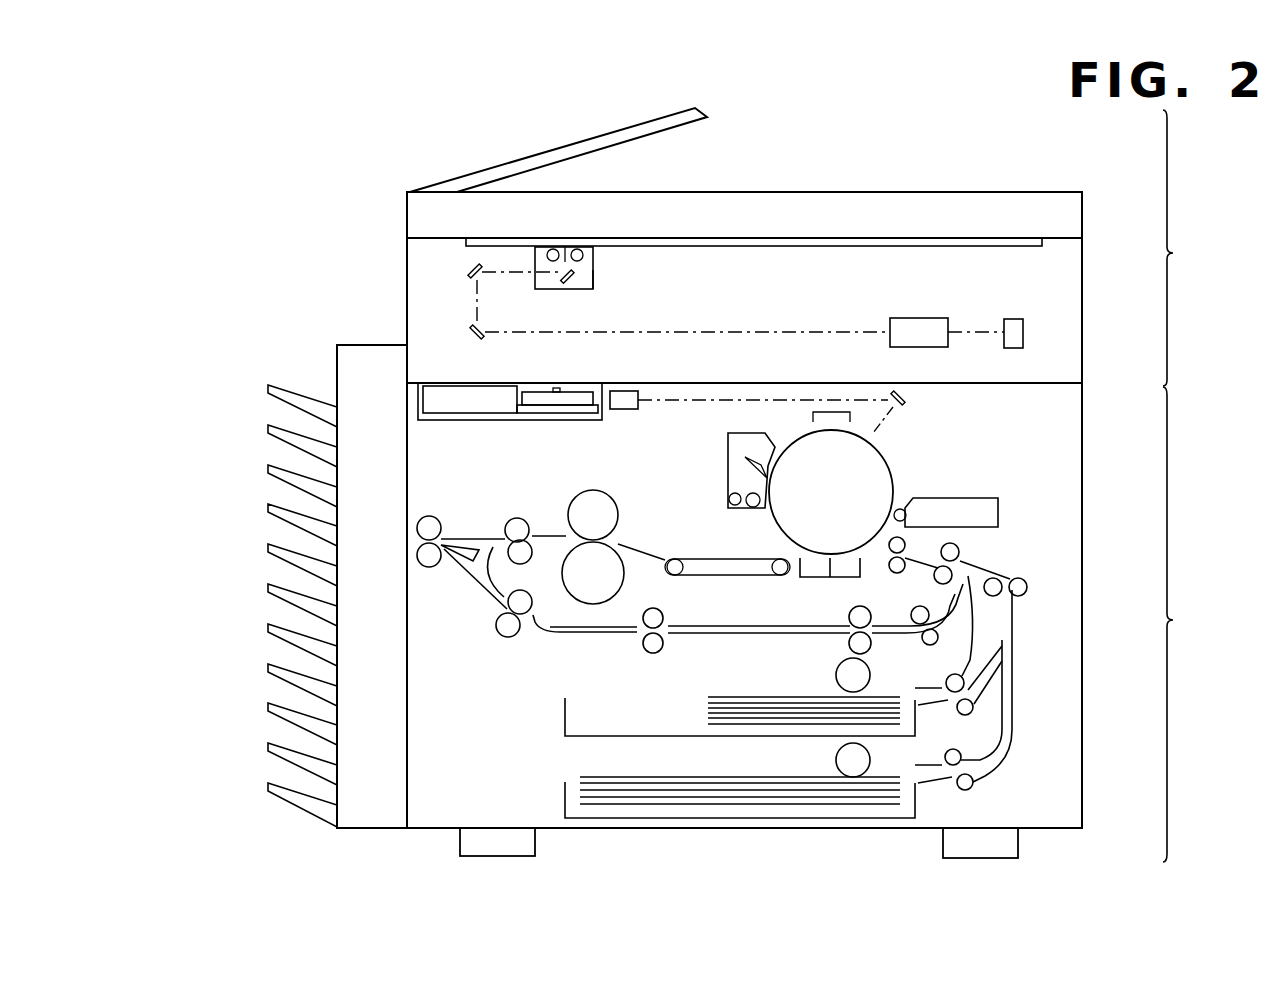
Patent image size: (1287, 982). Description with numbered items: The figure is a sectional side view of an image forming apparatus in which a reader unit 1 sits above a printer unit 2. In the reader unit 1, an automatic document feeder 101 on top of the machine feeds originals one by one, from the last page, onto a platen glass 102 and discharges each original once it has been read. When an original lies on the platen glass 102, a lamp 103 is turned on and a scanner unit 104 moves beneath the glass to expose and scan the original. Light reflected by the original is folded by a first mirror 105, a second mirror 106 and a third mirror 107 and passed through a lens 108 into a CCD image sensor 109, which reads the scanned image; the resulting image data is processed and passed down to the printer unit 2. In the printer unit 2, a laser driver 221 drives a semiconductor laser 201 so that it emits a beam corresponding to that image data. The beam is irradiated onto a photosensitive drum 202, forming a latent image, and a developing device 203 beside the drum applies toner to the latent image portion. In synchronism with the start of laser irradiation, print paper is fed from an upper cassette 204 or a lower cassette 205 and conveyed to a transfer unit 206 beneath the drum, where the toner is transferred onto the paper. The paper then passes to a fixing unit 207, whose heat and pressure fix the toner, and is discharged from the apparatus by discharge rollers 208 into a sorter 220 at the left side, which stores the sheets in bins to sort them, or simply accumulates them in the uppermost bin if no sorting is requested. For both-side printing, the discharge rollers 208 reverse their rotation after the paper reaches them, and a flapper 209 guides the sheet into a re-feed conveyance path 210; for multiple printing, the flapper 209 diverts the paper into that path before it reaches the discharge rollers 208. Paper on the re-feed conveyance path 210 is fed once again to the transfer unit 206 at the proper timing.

The reader unit 1 is at (1181, 248).
The printer unit 2 is at (1178, 624).
The automatic document feeder 101 is at (527, 157).
The platen glass 102 is at (910, 240).
The lamp 103 is at (593, 260).
The scanner unit 104 is at (594, 285).
The mirror 105 is at (569, 284).
The mirror 106 is at (468, 271).
The mirror 107 is at (469, 331).
The lens 108 is at (918, 318).
The CCD image sensor 109 is at (1013, 319).
The semiconductor laser 201 is at (625, 410).
The photosensitive drum 202 is at (797, 441).
The developing device 203 is at (957, 498).
The cassette 204 is at (893, 725).
The cassette 205 is at (893, 805).
The transfer unit 206 is at (812, 580).
The fixing unit 207 is at (569, 526).
The discharge rollers 208 is at (417, 527).
The flapper 209 is at (457, 562).
The re-feed conveyance path 210 is at (603, 634).
The sorter 220 is at (365, 820).
The laser driver 221 is at (535, 388).